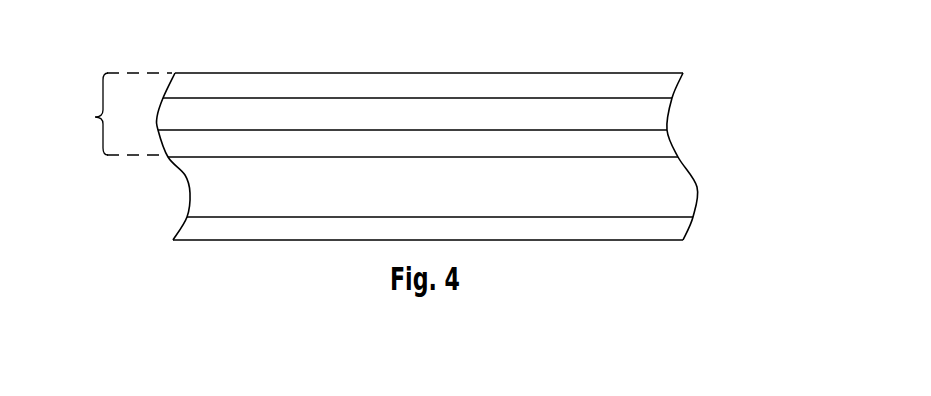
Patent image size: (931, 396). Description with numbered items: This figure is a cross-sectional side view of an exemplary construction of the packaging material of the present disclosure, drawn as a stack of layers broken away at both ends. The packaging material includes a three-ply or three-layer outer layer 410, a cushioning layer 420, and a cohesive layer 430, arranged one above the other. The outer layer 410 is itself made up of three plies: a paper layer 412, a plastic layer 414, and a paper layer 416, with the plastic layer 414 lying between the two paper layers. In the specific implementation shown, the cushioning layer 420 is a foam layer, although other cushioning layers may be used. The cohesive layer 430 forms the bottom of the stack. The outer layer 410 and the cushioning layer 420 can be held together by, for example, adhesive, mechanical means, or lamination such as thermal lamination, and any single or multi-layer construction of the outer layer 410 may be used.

The outer layer 410 is at (400, 89).
The paper layer 412 is at (628, 87).
The plastic layer 414 is at (542, 115).
The paper layer 416 is at (663, 147).
The cushioning layer 420 is at (687, 190).
The cohesive layer 430 is at (632, 227).